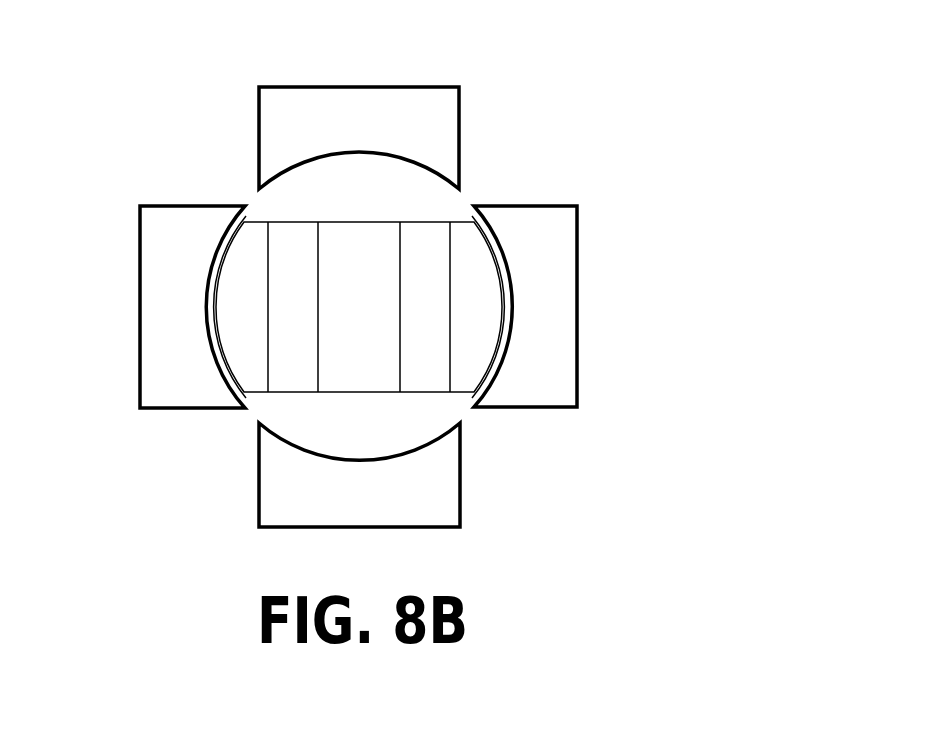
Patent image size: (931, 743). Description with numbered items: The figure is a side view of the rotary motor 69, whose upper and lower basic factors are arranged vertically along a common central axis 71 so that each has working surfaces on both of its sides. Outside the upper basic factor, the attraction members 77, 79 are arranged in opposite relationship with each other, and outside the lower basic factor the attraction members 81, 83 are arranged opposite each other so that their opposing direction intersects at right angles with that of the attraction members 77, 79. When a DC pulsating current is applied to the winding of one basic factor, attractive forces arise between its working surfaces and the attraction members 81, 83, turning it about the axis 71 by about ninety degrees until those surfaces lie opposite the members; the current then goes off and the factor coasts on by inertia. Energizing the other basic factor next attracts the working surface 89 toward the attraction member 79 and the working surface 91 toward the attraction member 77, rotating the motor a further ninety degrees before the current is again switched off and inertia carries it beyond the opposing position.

The rotary motor 69 is at (485, 101).
The common axis 71 is at (360, 305).
The attraction member 77 is at (427, 87).
The attraction member 79 is at (460, 481).
The attraction member 81 is at (190, 205).
The attraction member 83 is at (553, 205).
The working surface 89 is at (217, 288).
The working surface 91 is at (498, 262).